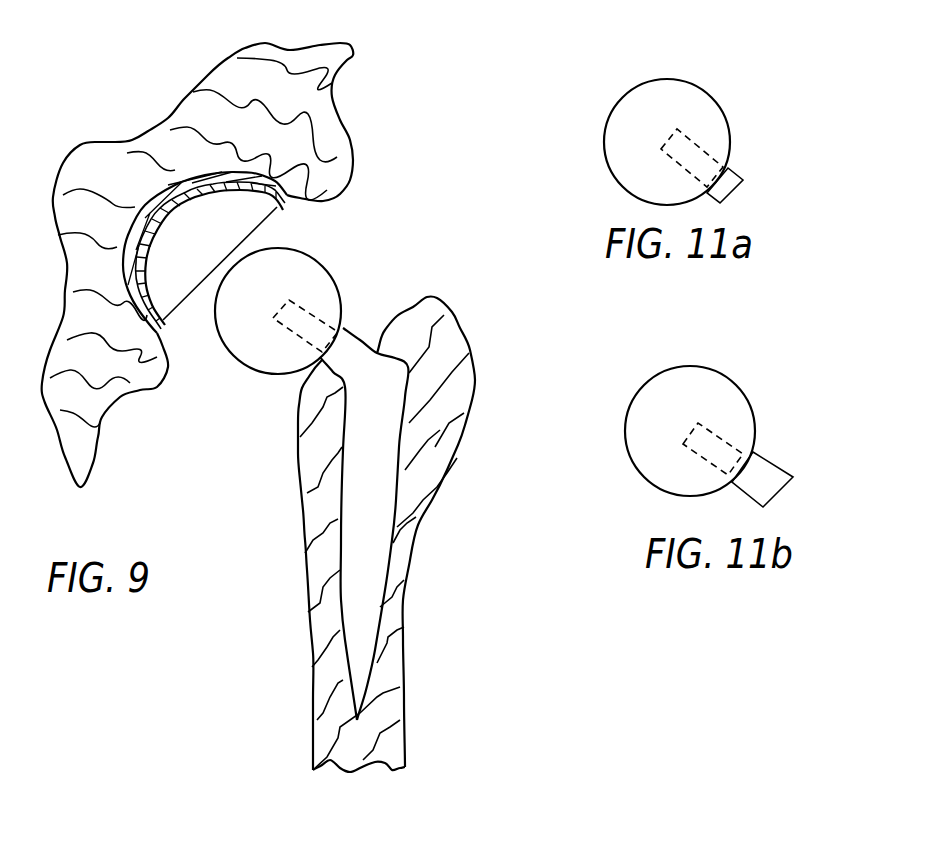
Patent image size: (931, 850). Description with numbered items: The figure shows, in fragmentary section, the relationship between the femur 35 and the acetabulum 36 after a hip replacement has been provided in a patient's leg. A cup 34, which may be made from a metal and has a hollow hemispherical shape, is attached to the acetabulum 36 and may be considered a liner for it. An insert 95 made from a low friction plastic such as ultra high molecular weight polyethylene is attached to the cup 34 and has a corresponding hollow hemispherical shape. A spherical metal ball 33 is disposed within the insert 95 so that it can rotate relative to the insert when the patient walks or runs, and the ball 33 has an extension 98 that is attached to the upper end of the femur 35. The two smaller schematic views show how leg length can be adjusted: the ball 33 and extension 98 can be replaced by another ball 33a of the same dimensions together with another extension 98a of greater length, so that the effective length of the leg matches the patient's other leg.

In FIG. 9, the spherical ball 33 is at (263, 355).
In FIG. 11A, the spherical ball 33 is at (632, 120).
In FIG. 11B, the replacement ball 33a is at (660, 397).
In FIG. 9, the cup 34 is at (287, 197).
In FIG. 9, the femur 35 is at (377, 453).
In FIG. 9, the acetabulum 36 is at (347, 135).
In FIG. 9, the insert 95 is at (283, 210).
In FIG. 9, the extension 98 is at (352, 353).
In FIG. 11A, the extension 98 is at (733, 178).
In FIG. 11B, the replacement extension 98a is at (765, 472).